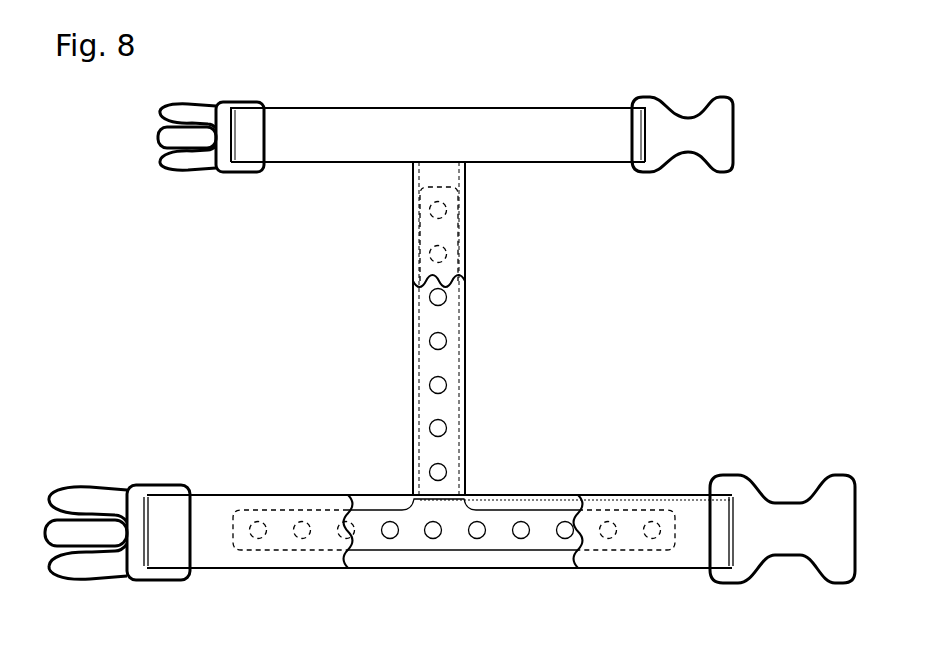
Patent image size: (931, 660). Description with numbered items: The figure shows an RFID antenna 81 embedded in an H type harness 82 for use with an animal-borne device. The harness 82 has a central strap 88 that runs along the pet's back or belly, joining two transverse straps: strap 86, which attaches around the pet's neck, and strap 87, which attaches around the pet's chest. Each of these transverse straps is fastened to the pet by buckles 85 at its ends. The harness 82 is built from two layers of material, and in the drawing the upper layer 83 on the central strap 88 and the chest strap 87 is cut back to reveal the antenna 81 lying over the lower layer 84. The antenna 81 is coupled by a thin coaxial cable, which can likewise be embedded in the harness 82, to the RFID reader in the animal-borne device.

The antenna 81 is at (455, 395).
The H type harness 82 is at (485, 93).
The upper layer 83 is at (300, 560).
The lower layer 84 is at (453, 558).
The buckles 85 is at (229, 165).
The strap 86 is at (331, 156).
The strap 87 is at (618, 502).
The central strap 88 is at (463, 261).